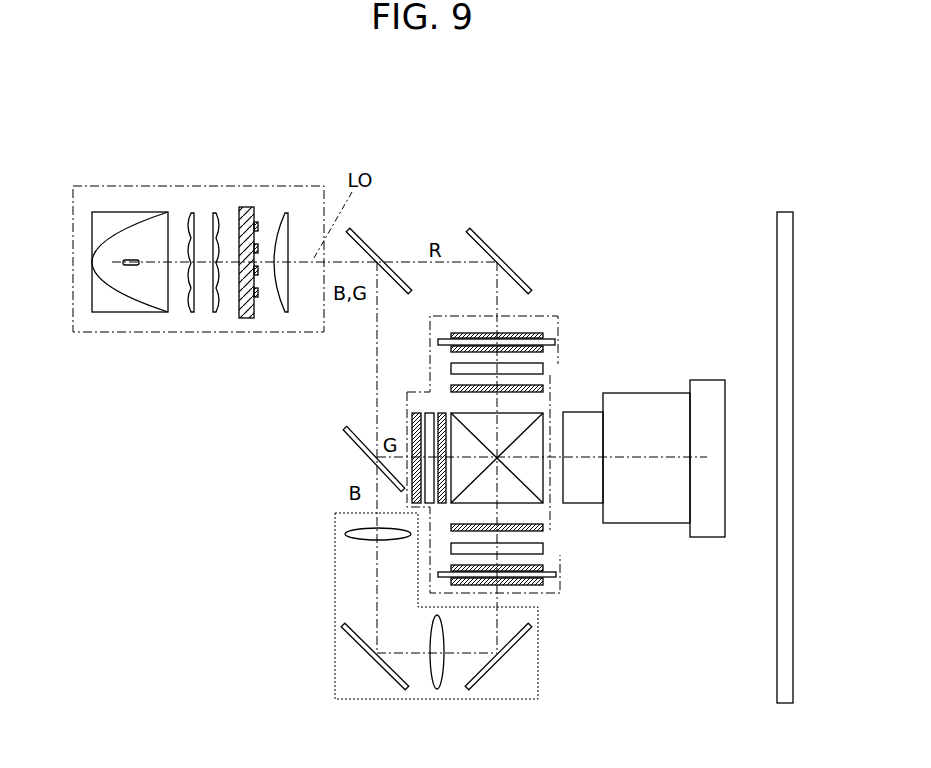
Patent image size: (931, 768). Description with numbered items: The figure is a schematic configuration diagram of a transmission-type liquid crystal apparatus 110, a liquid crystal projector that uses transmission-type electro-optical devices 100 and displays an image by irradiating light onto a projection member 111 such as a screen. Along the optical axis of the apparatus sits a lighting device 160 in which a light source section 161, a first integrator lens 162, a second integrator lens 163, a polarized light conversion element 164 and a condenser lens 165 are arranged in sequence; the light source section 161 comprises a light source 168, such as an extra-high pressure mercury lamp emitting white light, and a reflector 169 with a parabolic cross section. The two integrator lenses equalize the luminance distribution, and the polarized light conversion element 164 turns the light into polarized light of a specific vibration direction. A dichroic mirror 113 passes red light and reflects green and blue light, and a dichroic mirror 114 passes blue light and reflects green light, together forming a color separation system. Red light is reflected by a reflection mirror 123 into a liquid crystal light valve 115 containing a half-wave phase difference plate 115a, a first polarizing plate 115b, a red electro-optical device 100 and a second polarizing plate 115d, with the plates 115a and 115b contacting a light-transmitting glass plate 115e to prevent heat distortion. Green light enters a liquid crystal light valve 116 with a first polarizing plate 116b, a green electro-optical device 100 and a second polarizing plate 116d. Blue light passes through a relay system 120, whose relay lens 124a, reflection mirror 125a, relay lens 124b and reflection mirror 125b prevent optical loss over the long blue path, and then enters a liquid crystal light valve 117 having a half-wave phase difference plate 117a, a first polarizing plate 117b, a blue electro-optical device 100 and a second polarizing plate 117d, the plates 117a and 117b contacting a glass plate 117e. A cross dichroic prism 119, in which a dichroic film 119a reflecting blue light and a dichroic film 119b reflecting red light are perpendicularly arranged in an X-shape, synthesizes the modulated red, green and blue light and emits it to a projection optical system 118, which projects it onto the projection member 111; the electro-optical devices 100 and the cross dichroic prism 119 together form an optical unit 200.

The transmission-type liquid crystal apparatus 110 is at (585, 217).
The projection member 111 is at (784, 212).
The dichroic mirror 113 is at (372, 254).
The dichroic mirror 114 is at (360, 446).
The liquid crystal light valve 115 is at (582, 332).
The λ/2 phase difference plate 115a is at (543, 335).
The first polarizing plate 115b is at (543, 349).
The second polarizing plate 115d is at (543, 388).
The light-transmitting glass plate 115e is at (556, 342).
The liquid crystal light valve 116 is at (330, 424).
The first polarizing plate 116b is at (415, 412).
The second polarizing plate 116d is at (428, 412).
The liquid crystal light valve 117 is at (579, 584).
The λ/2 phase difference plate 117a is at (543, 582).
The first polarizing plate 117b is at (543, 568).
The second polarizing plate 117d is at (543, 527).
The glass plate 117e is at (556, 575).
The projection optical system 118 is at (707, 537).
The cross dichroic prism 119 is at (538, 475).
The dichroic film 119a is at (540, 425).
The dichroic film 119b is at (456, 412).
The relay system 120 is at (436, 638).
The reflection mirror 123 is at (486, 248).
The relay lens 124a is at (350, 533).
The relay lens 124b is at (437, 689).
The reflection mirror 125a is at (383, 665).
The reflection mirror 125b is at (508, 647).
The lighting device 160 is at (191, 260).
The light source section 161 is at (107, 213).
The first integrator lens 162 is at (190, 213).
The second integrator lens 163 is at (216, 213).
The polarized light conversion element 164 is at (246, 207).
The condenser lens 165 is at (286, 213).
The light source 168 is at (134, 259).
The reflector 169 is at (127, 230).
The electro-optical device 100 is at (543, 368).
The optical unit 200 is at (552, 428).